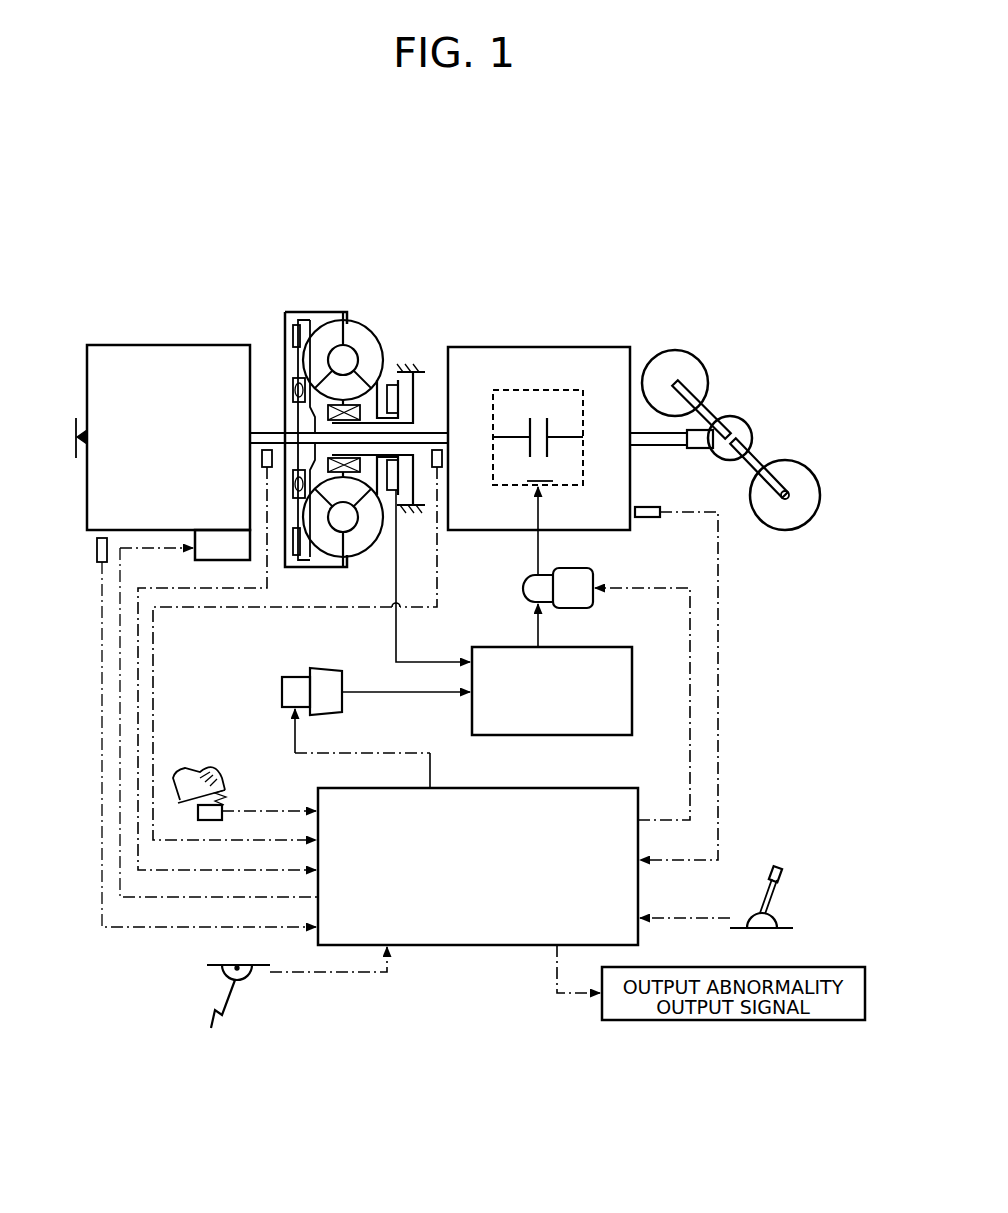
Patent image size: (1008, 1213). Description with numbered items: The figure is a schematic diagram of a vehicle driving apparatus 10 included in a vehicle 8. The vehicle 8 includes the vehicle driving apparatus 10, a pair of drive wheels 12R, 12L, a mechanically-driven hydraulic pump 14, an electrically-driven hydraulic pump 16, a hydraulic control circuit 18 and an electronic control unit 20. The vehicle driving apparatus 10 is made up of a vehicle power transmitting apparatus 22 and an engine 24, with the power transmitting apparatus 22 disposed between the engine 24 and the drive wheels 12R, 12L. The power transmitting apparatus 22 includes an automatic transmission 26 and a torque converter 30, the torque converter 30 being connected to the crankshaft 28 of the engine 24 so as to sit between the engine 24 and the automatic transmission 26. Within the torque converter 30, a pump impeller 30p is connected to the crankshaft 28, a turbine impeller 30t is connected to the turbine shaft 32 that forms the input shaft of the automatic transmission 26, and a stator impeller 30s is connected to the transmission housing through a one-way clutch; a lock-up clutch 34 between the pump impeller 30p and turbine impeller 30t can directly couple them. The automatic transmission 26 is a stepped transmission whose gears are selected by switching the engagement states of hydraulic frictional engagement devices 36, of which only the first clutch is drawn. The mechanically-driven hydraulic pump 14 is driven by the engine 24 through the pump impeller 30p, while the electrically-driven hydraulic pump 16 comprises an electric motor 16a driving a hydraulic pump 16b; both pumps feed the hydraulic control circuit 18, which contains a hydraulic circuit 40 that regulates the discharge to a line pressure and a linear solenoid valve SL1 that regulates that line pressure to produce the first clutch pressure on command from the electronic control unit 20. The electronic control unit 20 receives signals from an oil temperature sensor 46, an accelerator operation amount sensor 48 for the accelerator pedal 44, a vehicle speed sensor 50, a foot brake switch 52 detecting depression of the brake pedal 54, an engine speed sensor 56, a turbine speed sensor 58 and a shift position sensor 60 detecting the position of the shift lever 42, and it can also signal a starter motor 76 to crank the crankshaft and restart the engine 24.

The vehicle 8 is at (726, 192).
The vehicle driving apparatus 10 is at (187, 237).
The drive wheel 12R is at (671, 356).
The drive wheel 12L is at (800, 470).
The mechanically-driven hydraulic pump 14 is at (392, 384).
The electrically-driven hydraulic pump 16 is at (346, 711).
The electric motor 16a is at (282, 690).
The hydraulic pump 16b is at (330, 676).
The hydraulic control circuit 18 is at (491, 614).
The electronic control unit 20 is at (520, 946).
The vehicle power transmitting apparatus 22 is at (483, 297).
The engine 24 is at (136, 346).
The automatic transmission 26 is at (604, 350).
The crankshaft 28 is at (270, 432).
The torque converter 30 is at (362, 400).
The turbine impeller 30t is at (336, 344).
The pump impeller 30p is at (355, 340).
The stator impeller 30s is at (339, 495).
The turbine shaft 32 is at (432, 438).
The lock-up clutch 34 is at (292, 337).
The hydraulic frictional engagement devices 36 is at (538, 380).
The hydraulic circuit 40 is at (518, 736).
The shift lever 42 is at (768, 893).
The accelerator pedal 44 is at (222, 782).
The oil temperature sensor 46 is at (100, 562).
The accelerator operation amount sensor 48 is at (204, 820).
The vehicle speed sensor 50 is at (648, 507).
The foot brake switch 52 is at (246, 977).
The brake pedal 54 is at (212, 1022).
The engine speed sensor 56 is at (272, 470).
The turbine speed sensor 58 is at (440, 470).
The shift position sensor 60 is at (778, 918).
The starter motor 76 is at (212, 560).
The linear solenoid valve SL1 is at (590, 571).